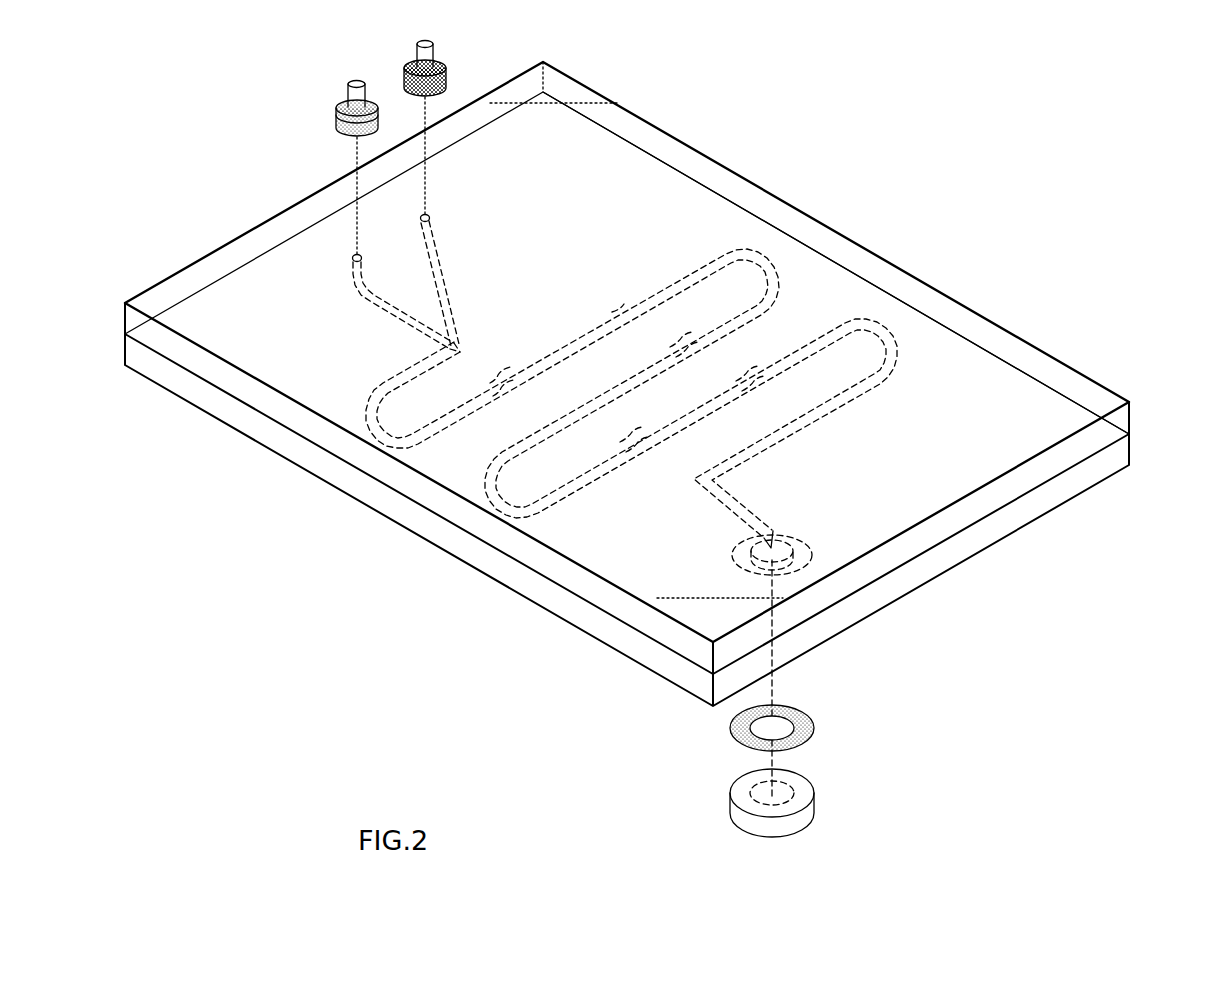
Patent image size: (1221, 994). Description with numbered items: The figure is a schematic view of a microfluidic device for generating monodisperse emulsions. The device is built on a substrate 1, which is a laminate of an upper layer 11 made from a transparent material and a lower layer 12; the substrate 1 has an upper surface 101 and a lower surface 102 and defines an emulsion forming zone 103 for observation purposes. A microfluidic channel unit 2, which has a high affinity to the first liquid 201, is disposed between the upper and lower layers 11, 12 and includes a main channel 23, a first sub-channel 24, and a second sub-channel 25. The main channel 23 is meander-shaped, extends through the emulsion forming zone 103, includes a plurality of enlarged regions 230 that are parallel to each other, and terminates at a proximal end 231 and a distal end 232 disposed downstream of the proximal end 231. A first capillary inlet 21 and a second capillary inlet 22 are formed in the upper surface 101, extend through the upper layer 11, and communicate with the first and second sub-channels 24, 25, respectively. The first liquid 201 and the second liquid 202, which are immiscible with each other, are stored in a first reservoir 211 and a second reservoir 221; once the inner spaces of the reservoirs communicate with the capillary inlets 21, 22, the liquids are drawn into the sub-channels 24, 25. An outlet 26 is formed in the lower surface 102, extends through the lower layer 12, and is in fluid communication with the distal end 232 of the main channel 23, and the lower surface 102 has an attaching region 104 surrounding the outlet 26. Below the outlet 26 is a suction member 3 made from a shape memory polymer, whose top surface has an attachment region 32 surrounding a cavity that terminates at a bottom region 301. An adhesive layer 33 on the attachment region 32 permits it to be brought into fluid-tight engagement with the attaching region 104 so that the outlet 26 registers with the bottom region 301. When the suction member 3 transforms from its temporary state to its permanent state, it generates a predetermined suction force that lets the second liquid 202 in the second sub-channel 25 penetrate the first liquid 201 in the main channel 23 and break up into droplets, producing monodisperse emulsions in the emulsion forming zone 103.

The substrate 1 is at (1193, 396).
The upper layer 11 is at (1130, 420).
The lower layer 12 is at (1130, 452).
The upper surface 101 is at (1090, 386).
The lower surface 102 is at (1105, 486).
The emulsion forming zone 103 is at (700, 253).
The attaching region 104 is at (807, 567).
The microfluidic channel unit 2 is at (617, 290).
The first capillary inlet 21 is at (352, 258).
The second capillary inlet 22 is at (430, 217).
The main channel 23 is at (666, 292).
The first sub-channel 24 is at (390, 313).
The second sub-channel 25 is at (437, 263).
The outlet 26 is at (788, 548).
The enlarged regions 230 is at (632, 393).
The proximal end 231 is at (462, 342).
The distal end 232 is at (773, 538).
The first liquid 201 is at (340, 120).
The first reservoir 211 is at (347, 91).
The second liquid 202 is at (447, 62).
The second reservoir 221 is at (416, 51).
The suction member 3 is at (830, 789).
The attachment region 32 is at (737, 793).
The bottom region 301 is at (760, 790).
The adhesive layer 33 is at (803, 720).